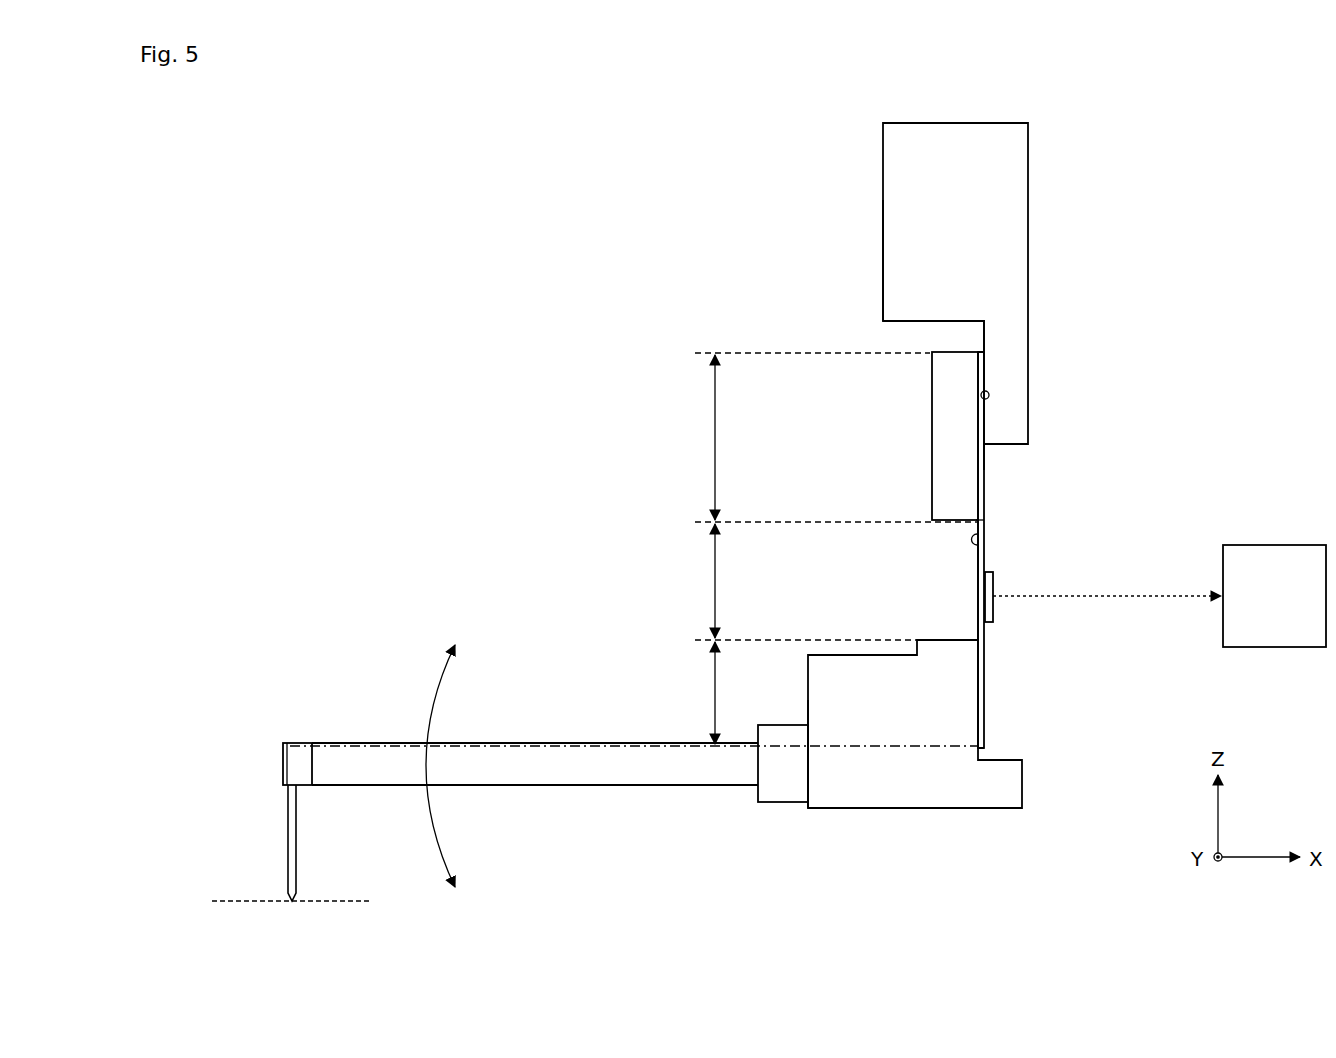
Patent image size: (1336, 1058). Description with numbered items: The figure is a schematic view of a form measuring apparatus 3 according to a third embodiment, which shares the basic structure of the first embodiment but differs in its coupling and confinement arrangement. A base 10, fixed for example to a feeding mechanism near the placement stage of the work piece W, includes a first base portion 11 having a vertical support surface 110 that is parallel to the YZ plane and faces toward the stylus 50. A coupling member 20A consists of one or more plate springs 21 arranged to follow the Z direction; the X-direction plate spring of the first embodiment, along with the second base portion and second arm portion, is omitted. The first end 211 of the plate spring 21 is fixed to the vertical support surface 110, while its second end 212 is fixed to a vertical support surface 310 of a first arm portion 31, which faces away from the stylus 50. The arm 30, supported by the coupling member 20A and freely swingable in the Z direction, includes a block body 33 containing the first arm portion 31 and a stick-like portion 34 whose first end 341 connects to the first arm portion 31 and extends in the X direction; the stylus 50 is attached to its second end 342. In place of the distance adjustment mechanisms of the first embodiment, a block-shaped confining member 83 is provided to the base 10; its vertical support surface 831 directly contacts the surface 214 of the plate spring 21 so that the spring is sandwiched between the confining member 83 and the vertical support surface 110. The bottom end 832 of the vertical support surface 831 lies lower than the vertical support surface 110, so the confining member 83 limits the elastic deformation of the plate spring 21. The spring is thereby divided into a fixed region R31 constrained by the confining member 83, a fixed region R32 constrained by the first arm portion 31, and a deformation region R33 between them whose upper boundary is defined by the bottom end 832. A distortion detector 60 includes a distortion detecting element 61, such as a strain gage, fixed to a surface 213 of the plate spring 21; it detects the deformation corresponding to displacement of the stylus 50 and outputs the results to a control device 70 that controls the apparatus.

The form measuring apparatus 3 is at (1192, 148).
The base 10 is at (838, 223).
The first base portion 11 is at (893, 286).
The vertical support surface 110 is at (983, 343).
The plate spring 21 is at (986, 497).
The first end 211 is at (988, 363).
The surface 213 is at (986, 458).
The surface 214 is at (988, 538).
The second end 212 is at (986, 735).
The confining member 83 is at (932, 457).
The vertical support surface 831 is at (980, 391).
The bottom end 832 is at (986, 519).
The coupling member 20A is at (920, 580).
The arm 30 is at (608, 568).
The first arm portion 31 is at (928, 808).
The vertical support surface 310 is at (986, 705).
The block body 33 is at (805, 623).
The stick-like portion 34 is at (548, 743).
The first end 341 is at (745, 802).
The second end 342 is at (298, 743).
The stylus 50 is at (288, 842).
The work piece W is at (358, 900).
The fixed region R31 is at (693, 437).
The deformation region R33 is at (693, 581).
The fixed region R32 is at (693, 693).
The distortion detecting element 61 is at (996, 585).
The distortion detector 60 is at (1097, 570).
The control device 70 is at (1280, 545).